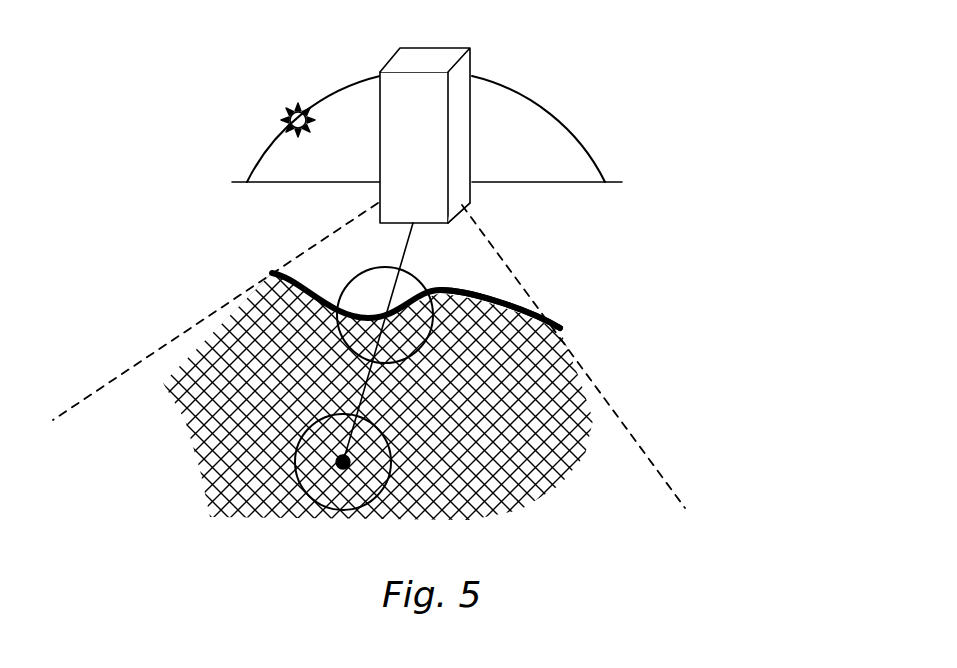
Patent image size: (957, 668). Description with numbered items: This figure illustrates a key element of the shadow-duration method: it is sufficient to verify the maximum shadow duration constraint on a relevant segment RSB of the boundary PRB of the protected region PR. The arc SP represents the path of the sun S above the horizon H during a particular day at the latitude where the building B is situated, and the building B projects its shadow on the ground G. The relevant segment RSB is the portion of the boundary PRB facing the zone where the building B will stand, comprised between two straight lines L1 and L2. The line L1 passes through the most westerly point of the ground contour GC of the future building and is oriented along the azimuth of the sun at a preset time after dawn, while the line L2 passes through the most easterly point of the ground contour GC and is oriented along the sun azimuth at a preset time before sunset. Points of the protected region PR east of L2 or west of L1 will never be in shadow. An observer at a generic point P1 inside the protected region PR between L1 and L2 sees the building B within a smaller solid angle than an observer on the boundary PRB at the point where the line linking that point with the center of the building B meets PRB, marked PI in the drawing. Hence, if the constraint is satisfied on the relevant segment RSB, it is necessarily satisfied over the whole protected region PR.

The building B is at (442, 48).
The sun path SP is at (356, 75).
The sun S is at (294, 113).
The horizon H is at (241, 182).
The generic point P1 is at (383, 312).
The ground contour GC is at (463, 217).
The ground G is at (622, 226).
The relevant segment RSB is at (455, 291).
The boundary of the protected region PRB is at (515, 307).
The protected region PR is at (530, 368).
The first straight line L1 is at (625, 417).
The second straight line L2 is at (192, 327).
The point of interest PI is at (351, 507).